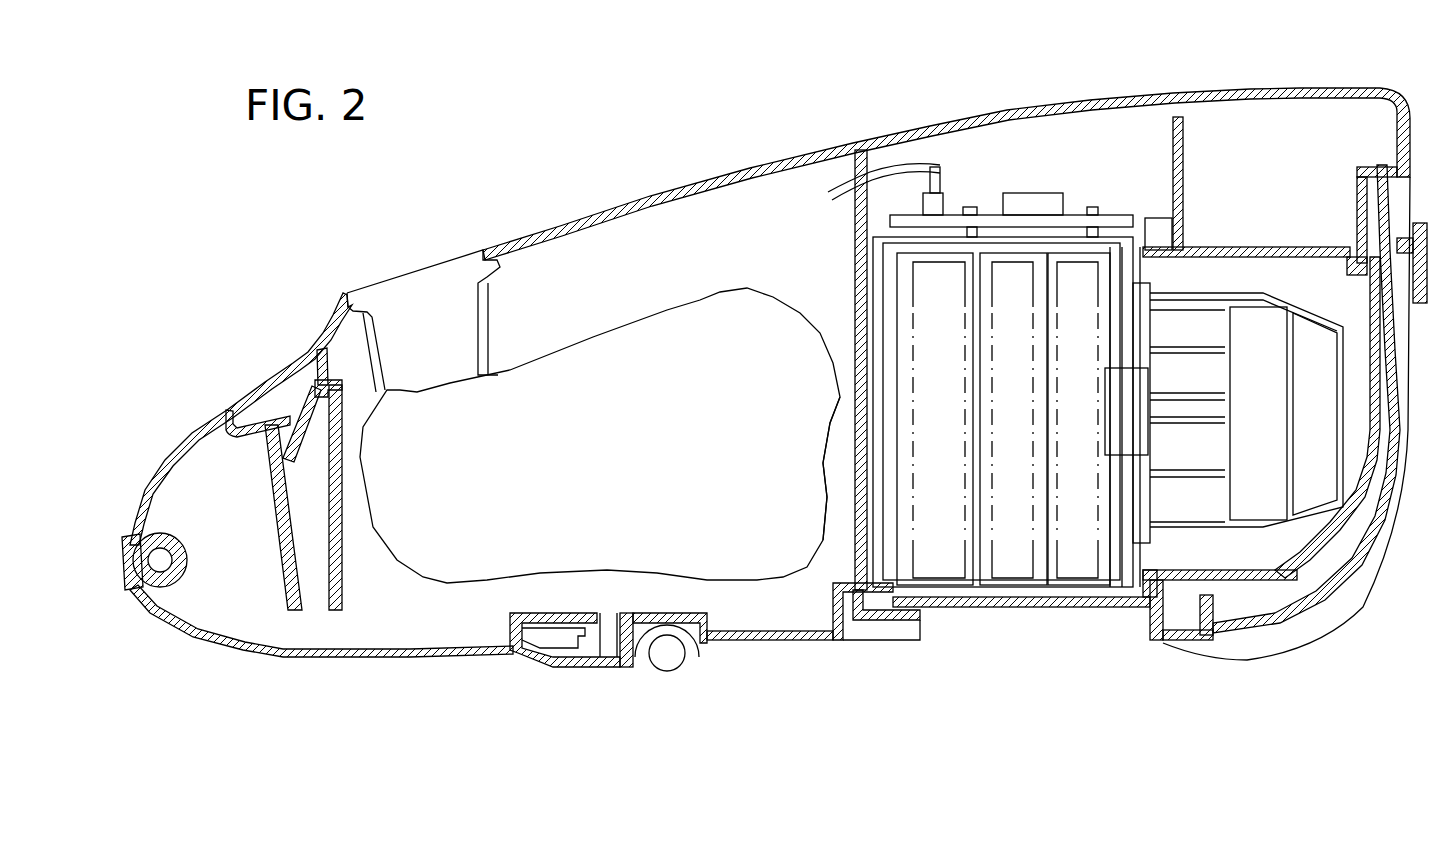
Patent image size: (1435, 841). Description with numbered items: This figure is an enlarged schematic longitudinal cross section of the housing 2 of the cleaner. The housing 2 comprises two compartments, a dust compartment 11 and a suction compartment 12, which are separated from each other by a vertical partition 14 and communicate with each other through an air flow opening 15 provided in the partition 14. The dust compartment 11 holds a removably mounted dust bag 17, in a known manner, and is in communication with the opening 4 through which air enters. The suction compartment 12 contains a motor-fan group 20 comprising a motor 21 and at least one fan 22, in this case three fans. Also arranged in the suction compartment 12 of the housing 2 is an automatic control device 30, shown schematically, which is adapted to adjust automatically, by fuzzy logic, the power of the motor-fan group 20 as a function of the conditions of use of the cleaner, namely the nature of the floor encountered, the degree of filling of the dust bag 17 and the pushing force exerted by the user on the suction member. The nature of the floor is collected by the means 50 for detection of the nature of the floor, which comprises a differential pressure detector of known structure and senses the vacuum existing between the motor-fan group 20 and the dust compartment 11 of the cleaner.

The housing 2 is at (700, 168).
The opening 4 is at (418, 295).
The dust compartment 11 is at (580, 285).
The suction compartment 12 is at (1328, 295).
The vertical partition 14 is at (853, 280).
The air flow opening 15 is at (857, 423).
The dust bag 17 is at (700, 300).
The motor-fan group 20 is at (1157, 546).
The motor 21 is at (1260, 510).
The fan 22 is at (941, 548).
The automatic control device 30 is at (1078, 180).
The means for detection of the nature of the floor 50 is at (950, 193).